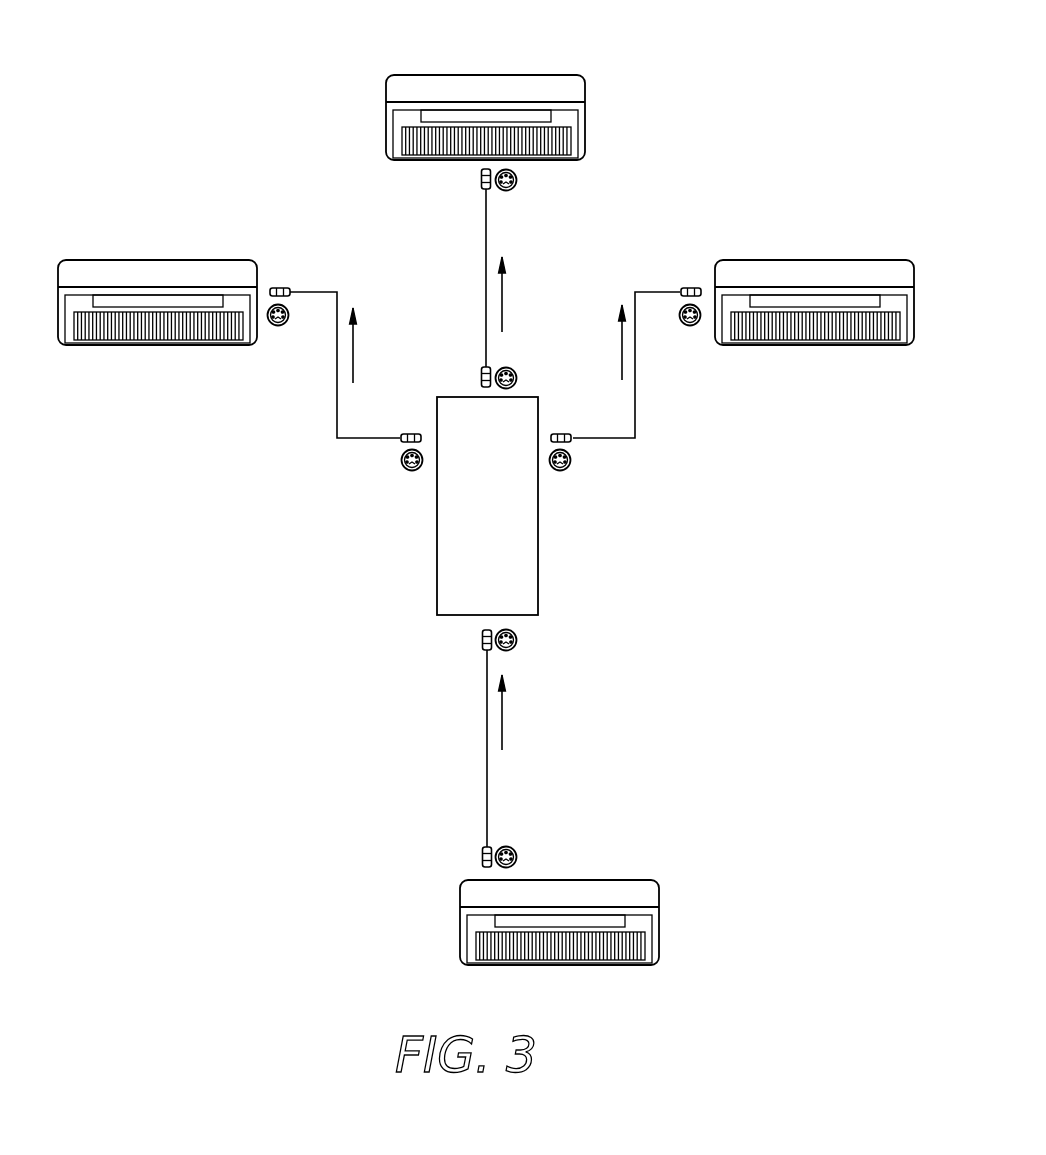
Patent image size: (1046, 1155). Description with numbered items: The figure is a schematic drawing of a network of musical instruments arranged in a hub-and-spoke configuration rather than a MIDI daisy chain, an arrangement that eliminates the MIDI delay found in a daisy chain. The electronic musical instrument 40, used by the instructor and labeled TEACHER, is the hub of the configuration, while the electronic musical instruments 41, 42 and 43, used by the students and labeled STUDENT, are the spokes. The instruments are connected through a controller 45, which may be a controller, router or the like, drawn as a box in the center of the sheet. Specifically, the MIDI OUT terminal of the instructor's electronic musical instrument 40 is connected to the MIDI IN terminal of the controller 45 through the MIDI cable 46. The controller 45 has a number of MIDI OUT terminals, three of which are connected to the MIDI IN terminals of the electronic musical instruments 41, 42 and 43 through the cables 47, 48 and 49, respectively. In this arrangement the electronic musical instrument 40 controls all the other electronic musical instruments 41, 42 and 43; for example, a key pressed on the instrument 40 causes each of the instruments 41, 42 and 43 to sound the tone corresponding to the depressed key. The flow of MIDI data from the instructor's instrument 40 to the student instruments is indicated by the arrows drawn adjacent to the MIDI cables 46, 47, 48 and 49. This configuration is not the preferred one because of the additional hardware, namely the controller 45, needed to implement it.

The electronic musical instrument 40 is at (608, 880).
The electronic musical instrument 41 is at (222, 345).
The electronic musical instrument 42 is at (549, 75).
The electronic musical instrument 43 is at (870, 260).
The controller 45 is at (543, 561).
The MIDI cable 46 is at (487, 733).
The MIDI cable 47 is at (353, 439).
The MIDI cable 48 is at (486, 273).
The MIDI cable 49 is at (636, 415).